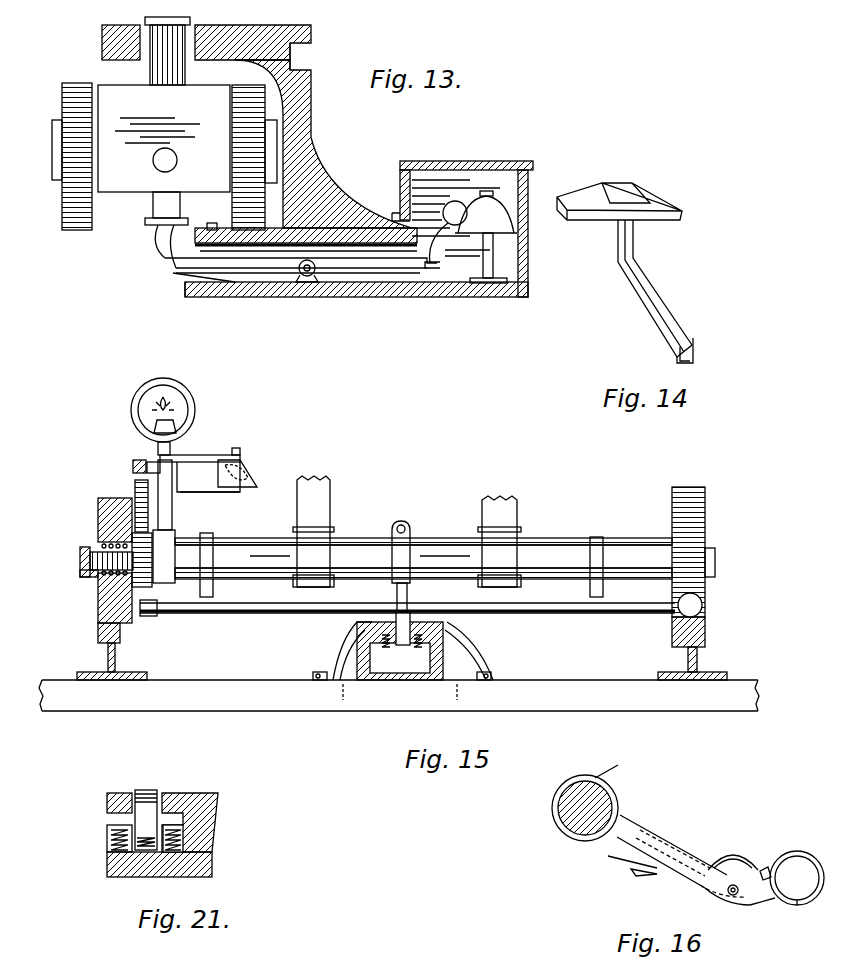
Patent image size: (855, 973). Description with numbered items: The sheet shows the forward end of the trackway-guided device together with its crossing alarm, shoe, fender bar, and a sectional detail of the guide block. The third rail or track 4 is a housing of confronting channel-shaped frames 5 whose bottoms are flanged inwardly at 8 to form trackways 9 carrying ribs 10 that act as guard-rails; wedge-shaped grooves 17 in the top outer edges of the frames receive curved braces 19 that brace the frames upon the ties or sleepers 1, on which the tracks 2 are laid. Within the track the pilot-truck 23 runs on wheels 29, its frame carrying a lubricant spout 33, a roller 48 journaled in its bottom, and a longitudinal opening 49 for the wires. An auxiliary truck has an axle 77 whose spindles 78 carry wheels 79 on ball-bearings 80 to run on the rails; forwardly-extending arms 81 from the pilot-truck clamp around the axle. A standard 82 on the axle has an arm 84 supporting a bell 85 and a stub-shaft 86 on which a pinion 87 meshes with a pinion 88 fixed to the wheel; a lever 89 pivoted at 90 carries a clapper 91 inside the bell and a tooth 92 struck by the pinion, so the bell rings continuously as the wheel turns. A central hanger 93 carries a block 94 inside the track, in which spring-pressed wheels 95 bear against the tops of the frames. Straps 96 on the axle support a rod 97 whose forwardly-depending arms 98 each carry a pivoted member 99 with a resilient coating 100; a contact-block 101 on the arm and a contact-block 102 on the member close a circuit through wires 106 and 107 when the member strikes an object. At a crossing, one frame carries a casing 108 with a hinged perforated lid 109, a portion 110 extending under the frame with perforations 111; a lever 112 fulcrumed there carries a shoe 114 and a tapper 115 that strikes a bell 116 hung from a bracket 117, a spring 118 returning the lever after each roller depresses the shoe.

In FIG. 15, the ties or sleepers 1 is at (182, 690).
In FIG. 15, the tracks 2 is at (108, 656).
In FIG. 13, the third rail or track 4 is at (253, 30).
In FIG. 13, the channel-shaped frames 5 is at (312, 112).
In FIG. 15, the channel-shaped frames 5 is at (333, 646).
In FIG. 13, the inward flanges 8 is at (257, 248).
In FIG. 13, the trackways 9 is at (228, 253).
In FIG. 13, the ribs 10 is at (212, 223).
In FIG. 13, the wedge-shaped grooves 17 is at (306, 55).
In FIG. 15, the curved braces 19 is at (357, 653).
In FIG. 13, the pilot-truck 23 is at (164, 138).
In FIG. 13, the wheels 29 is at (68, 185).
In FIG. 13, the spout 33 is at (155, 68).
In FIG. 13, the roller 48 is at (150, 225).
In FIG. 13, the opening 49 is at (165, 160).
In FIG. 15, the axle 77 is at (423, 558).
In FIG. 15, the spindles 78 is at (90, 578).
In FIG. 15, the wheels 79 is at (97, 514).
In FIG. 15, the ball-bearings 80 is at (92, 546).
In FIG. 15, the forwardly-extending arms 81 is at (322, 503).
In FIG. 15, the standard 82 is at (172, 505).
In FIG. 15, the arm 84 is at (208, 477).
In FIG. 15, the bell 85 is at (242, 466).
In FIG. 15, the stub-shaft 86 is at (135, 482).
In FIG. 15, the pinion 87 is at (136, 462).
In FIG. 15, the pinion 88 is at (146, 589).
In FIG. 15, the lever 89 is at (224, 493).
In FIG. 15, the pivot 90 is at (200, 456).
In FIG. 15, the clapper 91 is at (258, 475).
In FIG. 15, the tooth 92 is at (150, 466).
In FIG. 15, the hanger 93 is at (188, 410).
In FIG. 15, the block 94 is at (405, 658).
In FIG. 21, the block 94 is at (218, 806).
In FIG. 15, the spring-pressed wheels 95 is at (385, 636).
In FIG. 21, the spring-pressed wheels 95 is at (150, 790).
In FIG. 15, the straps 96 is at (214, 556).
In FIG. 15, the rod 97 is at (255, 614).
In FIG. 16, the rod 97 is at (604, 800).
In FIG. 16, the forwardly-depending arms 98 is at (655, 835).
In FIG. 15, the pivotally-mounted member 99 is at (700, 605).
In FIG. 16, the pivotally-mounted member 99 is at (795, 886).
In FIG. 16, the resilient coating 100 is at (813, 903).
In FIG. 16, the contact-block 101 is at (745, 843).
In FIG. 16, the contact-block 102 is at (765, 873).
In FIG. 16, the wires 106 is at (613, 863).
In FIG. 16, the wires 107 is at (646, 875).
In FIG. 13, the casing 108 is at (465, 185).
In FIG. 13, the hinged perforated lid 109 is at (424, 163).
In FIG. 13, the casing extension 110 is at (349, 295).
In FIG. 13, the perforations 111 is at (400, 195).
In FIG. 13, the lever 112 is at (287, 265).
In FIG. 14, the lever 112 is at (644, 292).
In FIG. 13, the shoe 114 is at (160, 247).
In FIG. 14, the shoe 114 is at (647, 203).
In FIG. 13, the tapper 115 is at (458, 225).
In FIG. 13, the bell 116 is at (500, 202).
In FIG. 13, the bracket 117 is at (493, 268).
In FIG. 13, the spring 118 is at (197, 297).